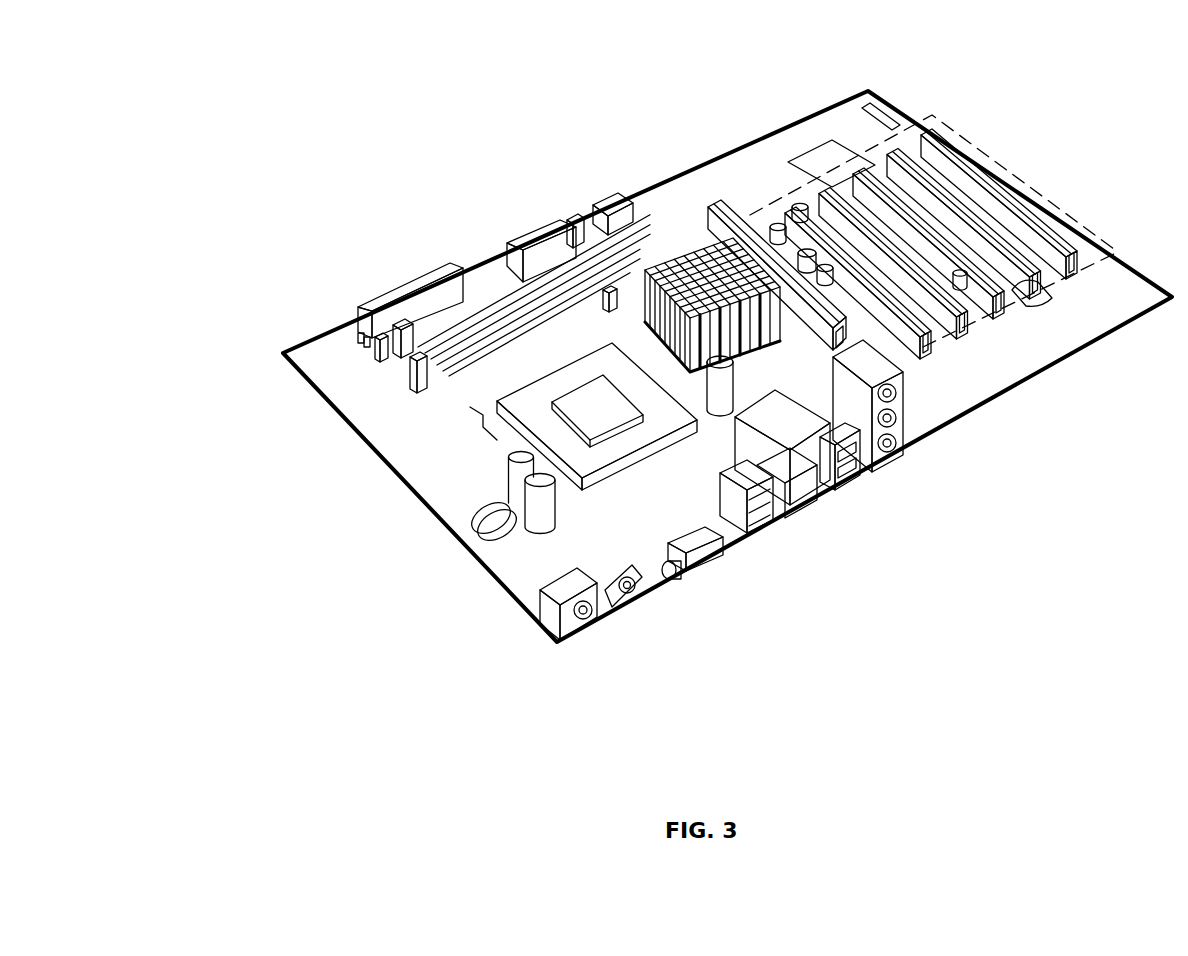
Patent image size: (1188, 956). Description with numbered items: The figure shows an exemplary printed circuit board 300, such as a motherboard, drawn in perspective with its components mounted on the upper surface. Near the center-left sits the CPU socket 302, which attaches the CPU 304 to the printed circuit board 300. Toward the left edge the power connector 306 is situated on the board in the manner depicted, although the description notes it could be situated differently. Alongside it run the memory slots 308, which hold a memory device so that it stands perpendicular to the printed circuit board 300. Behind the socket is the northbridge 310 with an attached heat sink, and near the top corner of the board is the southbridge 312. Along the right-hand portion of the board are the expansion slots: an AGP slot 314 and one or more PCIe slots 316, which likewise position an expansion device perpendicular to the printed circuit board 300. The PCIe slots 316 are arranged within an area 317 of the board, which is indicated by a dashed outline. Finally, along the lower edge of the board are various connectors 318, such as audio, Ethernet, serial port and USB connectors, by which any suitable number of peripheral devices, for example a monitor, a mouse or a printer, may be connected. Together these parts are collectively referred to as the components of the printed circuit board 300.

The printed circuit board 300 is at (268, 812).
The CPU socket 302 is at (488, 453).
The CPU 304 is at (498, 400).
The power connector 306 is at (392, 296).
The memory slots 308 is at (490, 292).
The northbridge 310 is at (699, 269).
The southbridge 312 is at (849, 135).
The AGP slot 314 is at (861, 313).
The PCIe slots 316 is at (999, 173).
The area 317 is at (1073, 207).
The connectors 318 is at (933, 450).